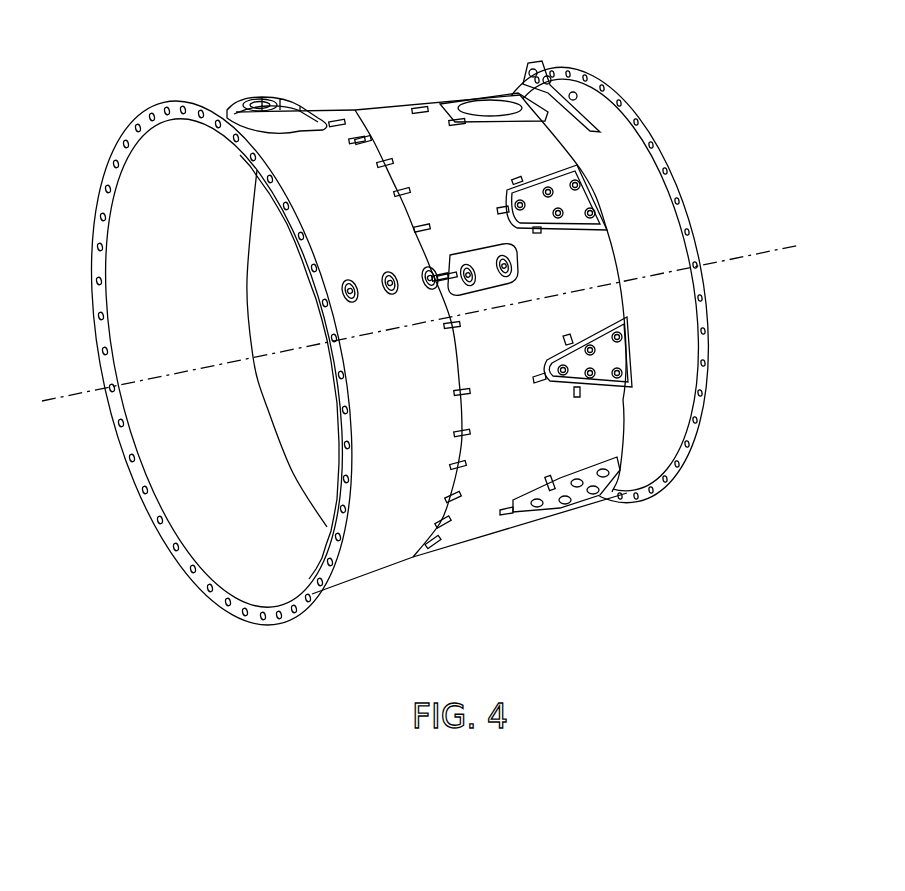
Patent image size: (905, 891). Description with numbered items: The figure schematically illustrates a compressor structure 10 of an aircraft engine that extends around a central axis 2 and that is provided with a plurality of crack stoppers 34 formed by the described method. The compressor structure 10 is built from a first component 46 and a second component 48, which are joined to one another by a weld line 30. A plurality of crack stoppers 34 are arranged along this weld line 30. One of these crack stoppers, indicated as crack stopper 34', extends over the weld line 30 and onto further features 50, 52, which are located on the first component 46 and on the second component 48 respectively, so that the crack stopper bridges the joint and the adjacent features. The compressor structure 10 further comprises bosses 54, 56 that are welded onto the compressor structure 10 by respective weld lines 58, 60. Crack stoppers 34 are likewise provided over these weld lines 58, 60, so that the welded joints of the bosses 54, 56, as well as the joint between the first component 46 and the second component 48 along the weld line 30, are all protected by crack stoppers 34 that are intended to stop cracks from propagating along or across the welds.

The central axis 2 is at (768, 255).
The compressor structure 10 is at (730, 121).
The weld line 30 is at (457, 413).
The crack stoppers 34 is at (438, 299).
The crack stopper 34' is at (483, 311).
The first component 46 is at (388, 543).
The second component 48 is at (487, 500).
The further feature 50 is at (432, 292).
The further feature 52 is at (455, 255).
The boss 54 is at (582, 500).
The boss 56 is at (455, 97).
The weld line 58 is at (578, 463).
The weld line 60 is at (503, 118).